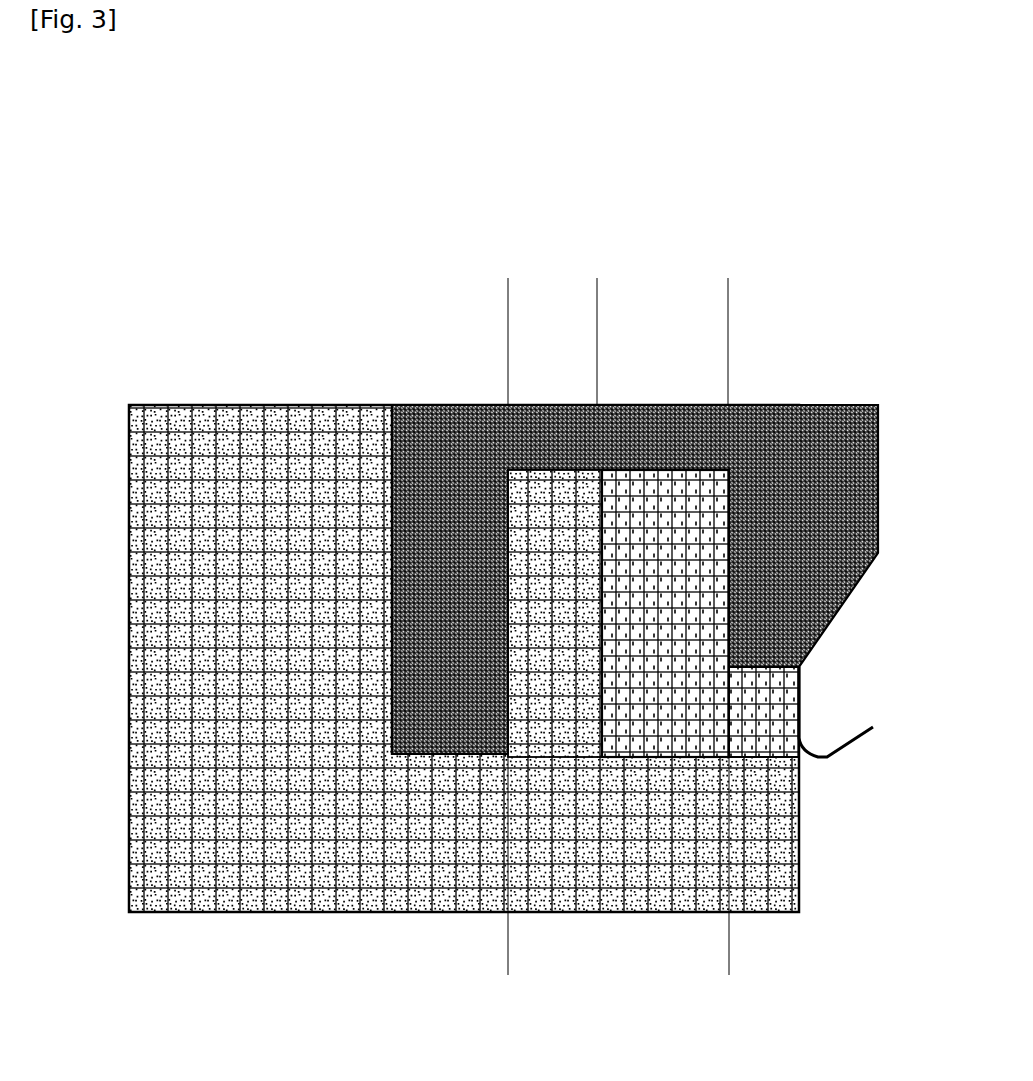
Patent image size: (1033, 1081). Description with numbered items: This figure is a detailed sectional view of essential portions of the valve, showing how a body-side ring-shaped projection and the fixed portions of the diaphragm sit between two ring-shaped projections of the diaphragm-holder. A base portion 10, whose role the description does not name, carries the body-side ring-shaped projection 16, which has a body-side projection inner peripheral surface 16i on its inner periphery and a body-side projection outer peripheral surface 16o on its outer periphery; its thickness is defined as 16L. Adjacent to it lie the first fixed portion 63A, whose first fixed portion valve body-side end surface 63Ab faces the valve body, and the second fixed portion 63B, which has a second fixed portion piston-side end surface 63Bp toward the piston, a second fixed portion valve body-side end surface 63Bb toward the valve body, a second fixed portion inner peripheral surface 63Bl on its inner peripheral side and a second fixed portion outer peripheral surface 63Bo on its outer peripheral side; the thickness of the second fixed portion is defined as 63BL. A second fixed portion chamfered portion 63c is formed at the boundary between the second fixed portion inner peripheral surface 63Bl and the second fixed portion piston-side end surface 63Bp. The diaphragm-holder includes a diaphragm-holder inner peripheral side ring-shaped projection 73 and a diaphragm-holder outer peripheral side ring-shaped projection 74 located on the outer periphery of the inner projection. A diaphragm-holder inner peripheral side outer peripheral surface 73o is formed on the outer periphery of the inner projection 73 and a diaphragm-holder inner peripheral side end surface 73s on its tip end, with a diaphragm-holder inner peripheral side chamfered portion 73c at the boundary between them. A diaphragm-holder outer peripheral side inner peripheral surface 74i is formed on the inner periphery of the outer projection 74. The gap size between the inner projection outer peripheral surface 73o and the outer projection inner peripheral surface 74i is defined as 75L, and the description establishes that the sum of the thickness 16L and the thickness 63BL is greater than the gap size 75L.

The substrate 10 is at (281, 699).
The body-side ring-shaped projection 16 is at (567, 637).
The body-side projection outer peripheral surface 16o is at (506, 647).
The body-side projection inner peripheral surface 16i is at (602, 696).
The thickness of body-side ring-shaped projection 16L is at (585, 305).
The first fixed portion 63A is at (790, 746).
The first fixed portion valve body-side end surface 63Ab is at (797, 770).
The second fixed portion 63B is at (689, 637).
The second fixed portion valve body-side end surface 63Bb is at (729, 770).
The second fixed portion outer peripheral surface 63Bo is at (609, 545).
The second fixed portion inner peripheral surface 63Bl is at (732, 519).
The second fixed portion piston-side end surface 63Bp is at (660, 469).
The thickness of second fixed portion 63BL is at (716, 305).
The second fixed portion chamfered portion 63c is at (738, 484).
The diaphragm-holder inner peripheral side ring-shaped projection 73 is at (800, 612).
The diaphragm-holder inner peripheral side outer peripheral surface 73o is at (716, 598).
The diaphragm-holder inner peripheral side end surface 73s is at (779, 662).
The diaphragm-holder inner peripheral side chamfered portion 73c is at (734, 672).
The diaphragm-holder outer peripheral side ring-shaped projection 74 is at (459, 605).
The diaphragm-holder outer peripheral side inner peripheral surface 74i is at (523, 470).
The gap size 75L is at (716, 974).